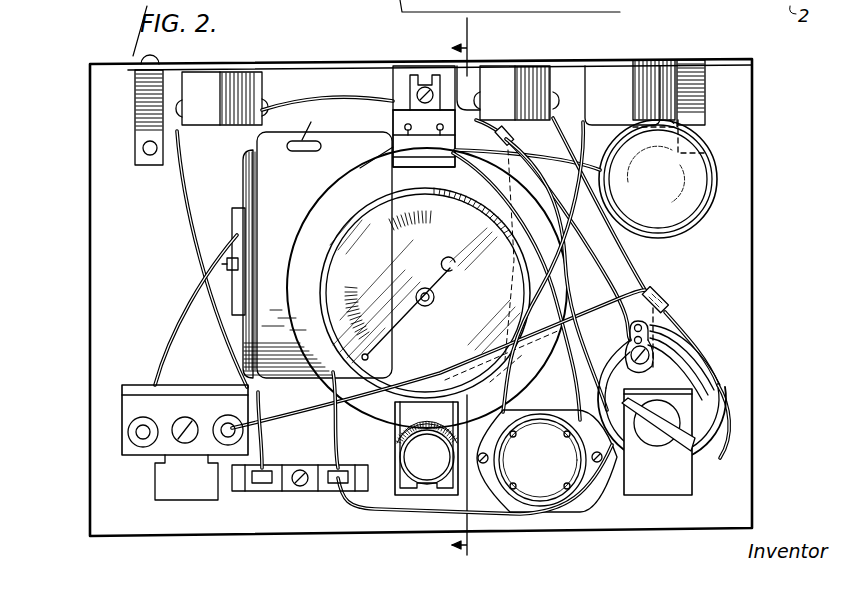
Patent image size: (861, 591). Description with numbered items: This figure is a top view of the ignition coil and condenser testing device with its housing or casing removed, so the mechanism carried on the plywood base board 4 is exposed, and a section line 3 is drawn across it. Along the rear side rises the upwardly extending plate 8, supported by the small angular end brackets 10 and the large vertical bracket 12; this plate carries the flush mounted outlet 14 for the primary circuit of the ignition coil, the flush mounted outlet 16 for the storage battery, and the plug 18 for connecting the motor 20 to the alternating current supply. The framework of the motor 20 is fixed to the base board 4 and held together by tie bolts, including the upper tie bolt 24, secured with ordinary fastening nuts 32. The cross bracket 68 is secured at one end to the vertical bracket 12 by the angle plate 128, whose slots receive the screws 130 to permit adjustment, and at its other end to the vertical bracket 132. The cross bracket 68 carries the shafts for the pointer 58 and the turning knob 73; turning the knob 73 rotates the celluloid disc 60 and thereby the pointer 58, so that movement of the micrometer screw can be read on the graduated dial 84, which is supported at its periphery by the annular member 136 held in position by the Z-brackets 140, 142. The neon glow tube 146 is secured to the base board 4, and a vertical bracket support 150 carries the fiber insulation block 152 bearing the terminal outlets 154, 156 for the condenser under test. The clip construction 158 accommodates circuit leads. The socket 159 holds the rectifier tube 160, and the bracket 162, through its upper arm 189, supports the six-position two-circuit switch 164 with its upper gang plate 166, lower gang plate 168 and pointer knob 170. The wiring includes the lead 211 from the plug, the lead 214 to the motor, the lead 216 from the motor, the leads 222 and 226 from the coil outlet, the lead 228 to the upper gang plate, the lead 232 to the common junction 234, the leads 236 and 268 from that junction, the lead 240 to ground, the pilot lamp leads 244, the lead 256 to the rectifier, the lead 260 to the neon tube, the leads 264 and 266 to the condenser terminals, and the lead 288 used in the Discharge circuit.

The section line 3- 3 is at (470, 300).
The base board 4 is at (740, 219).
The upwardly extending plate 8 is at (322, 64).
The angular end brackets 10 is at (140, 108).
The vertical bracket 12 is at (400, 74).
The flush mounted outlet 14 is at (217, 126).
The flush mounted outlet 16 is at (542, 80).
The plug 18 is at (656, 72).
The motor 20 is at (253, 188).
The upper tie bolt 24 is at (226, 263).
The fastening nuts 32 is at (243, 254).
The pointer 58 is at (400, 320).
The centrally bored disc 60 is at (323, 208).
The cross bracket 68 is at (464, 162).
The turning knob 73 is at (413, 441).
The graduated scale or dial 84 is at (500, 232).
The angle plate 128 is at (403, 118).
The screws 130 is at (424, 138).
The vertical bracket 132 is at (408, 492).
The annular member 136 is at (328, 258).
The Z-bracket 140 is at (523, 374).
The Z-bracket 142 is at (390, 192).
The neon glow tube 146 is at (716, 166).
The vertical bracket support 150 is at (168, 487).
The fiber insulation block 152 is at (130, 402).
The terminal outlet 154 is at (135, 438).
The terminal outlet 156 is at (222, 414).
The clip construction 158 is at (292, 494).
The socket 159 is at (561, 512).
The rectifier tube 160 is at (536, 486).
The bracket 162 is at (653, 498).
The switch 164 is at (718, 420).
The upper gang plate 166 is at (686, 356).
The lower gang plate 168 is at (690, 328).
The pointer knob 170 is at (670, 443).
The upper arm 189 is at (672, 480).
The lead 211 is at (722, 365).
The lead 214 is at (560, 140).
The lead 216 is at (604, 342).
The lead 222 is at (294, 114).
The lead 226 is at (188, 226).
The lead 228 is at (475, 477).
The lead 232 is at (630, 262).
The common junction 234 is at (648, 359).
The lead 236 is at (664, 303).
The lead 240 is at (482, 126).
The leads 244 is at (318, 414).
The lead 256 is at (575, 378).
The lead 260 is at (586, 380).
The lead 264 is at (167, 328).
The lead 266 is at (642, 276).
The lead 268 is at (700, 304).
The lead 288 is at (603, 253).